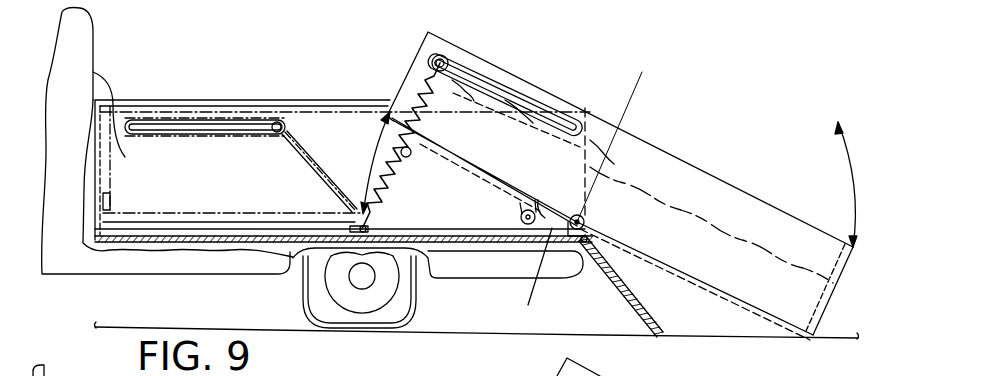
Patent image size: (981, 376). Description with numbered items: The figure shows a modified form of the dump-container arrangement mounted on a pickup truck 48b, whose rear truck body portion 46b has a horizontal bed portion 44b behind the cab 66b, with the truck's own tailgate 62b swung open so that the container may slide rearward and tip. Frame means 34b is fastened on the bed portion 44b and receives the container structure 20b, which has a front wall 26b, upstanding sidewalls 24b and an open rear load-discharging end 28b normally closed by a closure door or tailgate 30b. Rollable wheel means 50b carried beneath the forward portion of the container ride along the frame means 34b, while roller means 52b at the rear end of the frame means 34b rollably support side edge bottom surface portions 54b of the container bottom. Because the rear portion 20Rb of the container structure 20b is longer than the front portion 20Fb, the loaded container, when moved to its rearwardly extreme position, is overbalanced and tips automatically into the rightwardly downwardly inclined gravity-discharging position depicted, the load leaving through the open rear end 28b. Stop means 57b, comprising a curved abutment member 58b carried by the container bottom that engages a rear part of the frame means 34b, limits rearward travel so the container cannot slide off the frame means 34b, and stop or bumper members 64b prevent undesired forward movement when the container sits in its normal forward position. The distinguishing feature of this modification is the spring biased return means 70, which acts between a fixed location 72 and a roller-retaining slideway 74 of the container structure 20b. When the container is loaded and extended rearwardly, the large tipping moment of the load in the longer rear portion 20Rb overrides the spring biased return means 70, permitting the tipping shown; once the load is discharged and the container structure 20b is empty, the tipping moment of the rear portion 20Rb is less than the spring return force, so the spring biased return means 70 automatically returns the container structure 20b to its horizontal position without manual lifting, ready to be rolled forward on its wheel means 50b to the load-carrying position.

The pickup truck 48b is at (160, 53).
The cab 66b is at (205, 145).
The frame means 34b is at (246, 186).
The rear truck body portion 46b is at (152, 287).
The horizontal bed portion 44b is at (280, 257).
The stop or bumper members 64b is at (383, 113).
The spring biased return means 70 is at (400, 173).
The fixed location 72 is at (365, 232).
The front wall 26b is at (437, 33).
The roller-retaining slideway 74 is at (502, 68).
The front portion of container structure 20Fb is at (532, 72).
The container structure 20b is at (620, 176).
The sidewalls 24b is at (653, 171).
The rear portion of container structure 20Rb is at (728, 176).
The rollable wheel means 50b is at (428, 150).
The curved abutment member 58b is at (566, 212).
The roller means 52b is at (588, 215).
The side edge bottom surface portions 54b is at (672, 278).
The open rear load-discharging end 28b is at (834, 224).
The closure door or tailgate 30b is at (830, 302).
The stop means 57b is at (543, 240).
The truck tailgate 62b is at (640, 292).